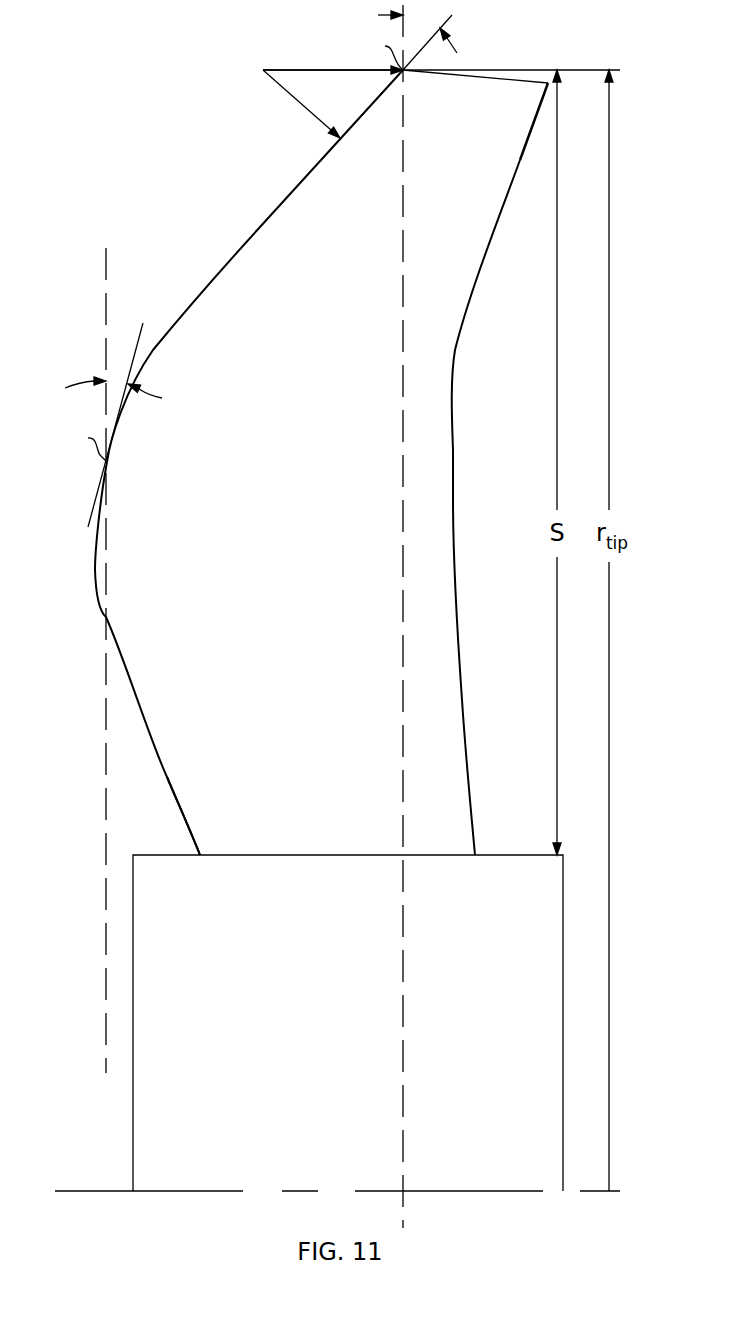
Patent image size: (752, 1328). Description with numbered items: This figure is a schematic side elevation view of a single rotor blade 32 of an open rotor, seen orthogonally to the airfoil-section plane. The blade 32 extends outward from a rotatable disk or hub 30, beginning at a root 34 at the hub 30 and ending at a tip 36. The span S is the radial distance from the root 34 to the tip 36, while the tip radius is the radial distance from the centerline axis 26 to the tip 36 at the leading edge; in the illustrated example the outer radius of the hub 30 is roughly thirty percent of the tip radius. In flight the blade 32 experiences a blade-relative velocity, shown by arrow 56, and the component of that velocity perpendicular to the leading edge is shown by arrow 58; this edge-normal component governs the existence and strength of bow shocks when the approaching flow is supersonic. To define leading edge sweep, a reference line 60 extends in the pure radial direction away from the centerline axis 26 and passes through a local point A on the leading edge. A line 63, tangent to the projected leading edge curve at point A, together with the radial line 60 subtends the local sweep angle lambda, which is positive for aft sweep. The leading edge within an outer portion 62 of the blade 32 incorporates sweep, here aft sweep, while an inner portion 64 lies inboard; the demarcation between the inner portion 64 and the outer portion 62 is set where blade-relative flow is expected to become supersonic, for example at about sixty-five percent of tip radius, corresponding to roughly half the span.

The centerline axis 26 is at (580, 1191).
The hub 30 is at (500, 877).
The rotor blade 32 is at (192, 126).
The root 34 is at (223, 855).
The tip 36 is at (525, 80).
The blade-relative velocity arrow 56 is at (333, 83).
The edge-normal velocity component arrow 58 is at (301, 111).
The reference line 60 is at (96, 318).
The outer portion 62 is at (254, 220).
The tangent line 63 is at (138, 340).
The inner portion 64 is at (156, 780).